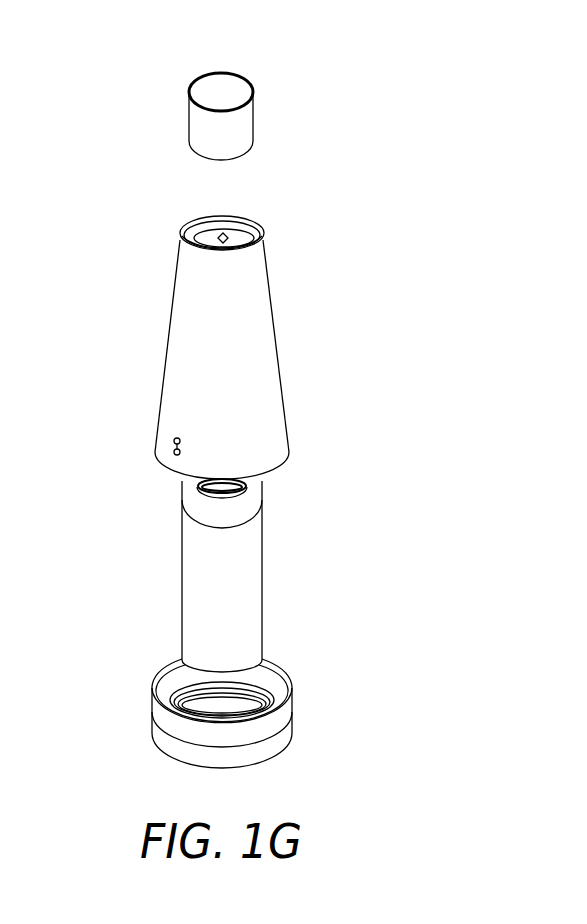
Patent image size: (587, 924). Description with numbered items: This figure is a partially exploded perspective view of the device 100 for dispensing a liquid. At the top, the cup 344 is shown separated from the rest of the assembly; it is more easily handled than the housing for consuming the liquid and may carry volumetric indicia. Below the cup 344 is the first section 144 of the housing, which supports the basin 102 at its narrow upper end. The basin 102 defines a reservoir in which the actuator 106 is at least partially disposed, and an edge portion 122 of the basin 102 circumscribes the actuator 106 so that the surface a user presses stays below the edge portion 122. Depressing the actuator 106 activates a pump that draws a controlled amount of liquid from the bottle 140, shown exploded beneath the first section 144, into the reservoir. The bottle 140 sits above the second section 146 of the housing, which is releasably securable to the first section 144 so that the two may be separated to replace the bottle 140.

The device 100 is at (396, 61).
The cup 344 is at (188, 104).
The basin 102 is at (255, 238).
The actuator 106 is at (214, 226).
The edge portion 122 is at (190, 218).
The first section 144 is at (276, 352).
The bottle 140 is at (257, 560).
The second section 146 is at (152, 718).